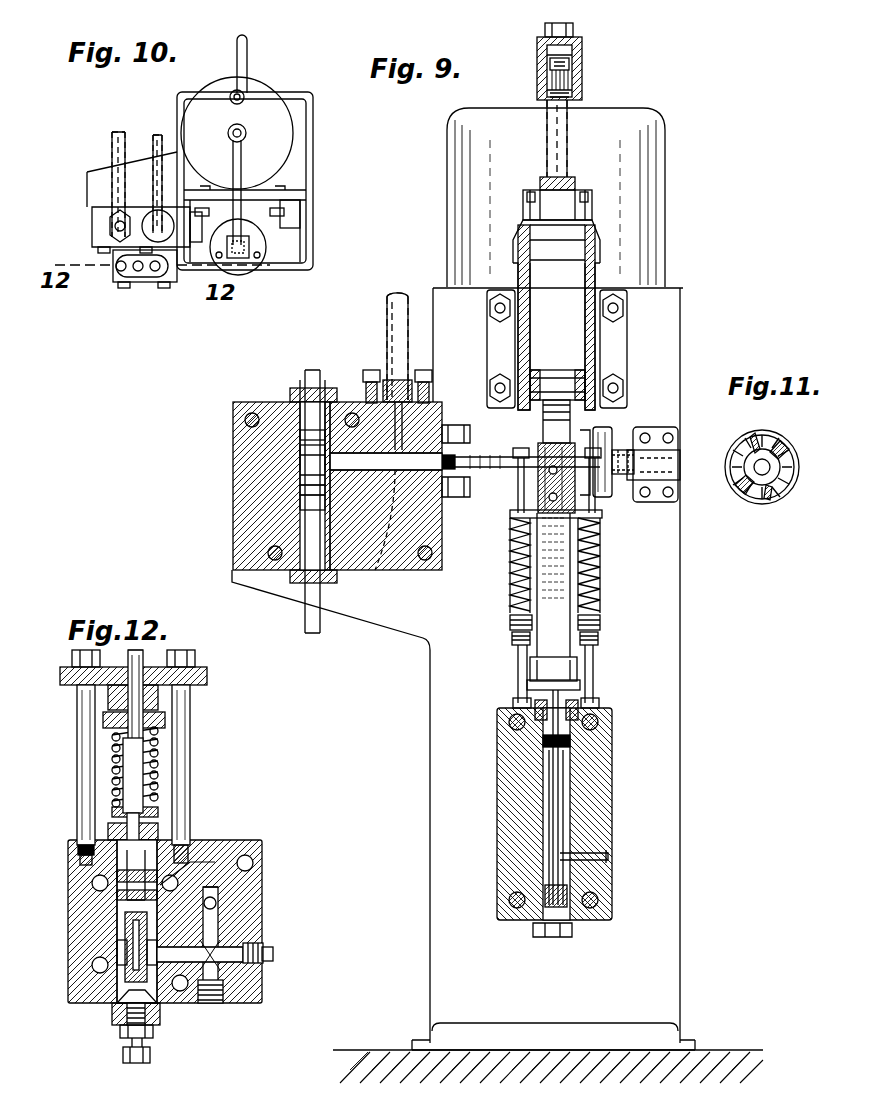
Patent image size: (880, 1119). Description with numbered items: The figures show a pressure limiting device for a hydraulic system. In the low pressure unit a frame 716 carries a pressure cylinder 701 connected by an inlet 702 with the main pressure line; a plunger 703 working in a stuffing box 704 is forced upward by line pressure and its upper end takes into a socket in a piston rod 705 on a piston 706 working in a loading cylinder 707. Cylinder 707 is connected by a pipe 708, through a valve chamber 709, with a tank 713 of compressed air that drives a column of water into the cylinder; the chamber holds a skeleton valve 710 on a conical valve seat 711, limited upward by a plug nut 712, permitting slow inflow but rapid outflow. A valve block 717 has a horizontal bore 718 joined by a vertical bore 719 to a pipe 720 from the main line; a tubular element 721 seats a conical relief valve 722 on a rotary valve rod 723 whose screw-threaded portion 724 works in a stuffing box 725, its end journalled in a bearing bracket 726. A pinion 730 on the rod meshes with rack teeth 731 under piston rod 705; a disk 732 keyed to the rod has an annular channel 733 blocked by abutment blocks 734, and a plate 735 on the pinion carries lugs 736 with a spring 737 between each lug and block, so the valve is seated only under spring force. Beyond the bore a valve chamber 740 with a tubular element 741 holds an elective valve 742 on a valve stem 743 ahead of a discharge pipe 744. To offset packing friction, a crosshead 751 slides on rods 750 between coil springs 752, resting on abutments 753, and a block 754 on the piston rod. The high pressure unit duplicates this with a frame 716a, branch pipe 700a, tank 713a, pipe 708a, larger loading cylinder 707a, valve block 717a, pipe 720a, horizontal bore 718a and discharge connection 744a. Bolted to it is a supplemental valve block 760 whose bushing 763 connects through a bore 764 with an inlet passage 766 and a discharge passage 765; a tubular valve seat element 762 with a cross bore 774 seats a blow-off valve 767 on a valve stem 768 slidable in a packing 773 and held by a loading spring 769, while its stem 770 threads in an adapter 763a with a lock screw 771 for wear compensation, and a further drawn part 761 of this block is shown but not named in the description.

In FIG. 10, the branch pipe 700a is at (248, 46).
In FIG. 10, the tank 713a is at (258, 75).
In FIG. 10, the pipe 720a is at (158, 140).
In FIG. 10, the discharge connection 744a is at (112, 145).
In FIG. 10, the horizontal bore 718a is at (135, 222).
In FIG. 10, the valve block 717a is at (97, 226).
In FIG. 10, the supplemental valve block 760 is at (118, 282).
In FIG. 12, the supplemental valve block 760 is at (262, 842).
In FIG. 10, the pipe 708a is at (243, 195).
In FIG. 10, the frame 716a is at (300, 198).
In FIG. 10, the loading cylinder 707a is at (245, 268).
In FIG. 9, the plug nut 712 is at (575, 27).
In FIG. 9, the skeleton valve 710 is at (548, 62).
In FIG. 9, the conical valve seat 711 is at (548, 72).
In FIG. 9, the valve chamber 709 is at (582, 85).
In FIG. 9, the pipe 708 is at (568, 142).
In FIG. 9, the tank 713 is at (665, 182).
In FIG. 9, the loading cylinder 707 is at (590, 358).
In FIG. 9, the piston 706 is at (578, 398).
In FIG. 9, the plate 735 is at (612, 430).
In FIG. 9, the pinion 730 is at (593, 440).
In FIG. 9, the disk 732 is at (630, 450).
In FIG. 11, the disk 732 is at (742, 500).
In FIG. 9, the bearing bracket 726 is at (678, 450).
In FIG. 9, the vertical bore 719 is at (395, 440).
In FIG. 9, the screw-threaded portion 724 is at (462, 452).
In FIG. 9, the rotary valve rod 723 is at (508, 468).
In FIG. 9, the stuffing box 725 is at (458, 497).
In FIG. 9, the rods 750 is at (518, 497).
In FIG. 9, the block 754 is at (575, 497).
In FIG. 9, the crosshead 751 is at (590, 513).
In FIG. 9, the coil springs 752 is at (600, 580).
In FIG. 9, the abutments 753 is at (510, 617).
In FIG. 9, the rack teeth 731 is at (536, 645).
In FIG. 9, the piston rod 705 is at (577, 653).
In FIG. 9, the stuffing box 704 is at (570, 740).
In FIG. 9, the plunger 703 is at (560, 760).
In FIG. 9, the pressure cylinder 701 is at (612, 802).
In FIG. 9, the inlet 702 is at (592, 858).
In FIG. 9, the frame 716 is at (430, 678).
In FIG. 9, the valve stem 743 is at (300, 432).
In FIG. 9, the valve chamber 740 is at (300, 465).
In FIG. 9, the elective valve 742 is at (300, 490).
In FIG. 9, the tubular element 741 is at (300, 502).
In FIG. 9, the valve block 717 is at (300, 520).
In FIG. 9, the discharge pipe 744 is at (305, 520).
In FIG. 9, the horizontal bore 718 is at (338, 402).
In FIG. 9, the pipe 720 is at (387, 312).
In FIG. 9, the tubular element 721 is at (372, 570).
In FIG. 9, the relief valve 722 is at (395, 570).
In FIG. 11, the abutment blocks 734 is at (753, 436).
In FIG. 11, the annular channel 733 is at (785, 436).
In FIG. 11, the lugs 736 is at (792, 462).
In FIG. 11, the spring 737 is at (780, 472).
In FIG. 12, the loading spring 769 is at (162, 768).
In FIG. 12, the valve stem 768 is at (80, 875).
In FIG. 12, the packing 773 is at (117, 876).
In FIG. 12, the blow-off valve 767 is at (220, 880).
In FIG. 12, the discharge passage 765 is at (117, 896).
In FIG. 12, the inlet passage 766 is at (220, 905).
In FIG. 12, the plunger 761 is at (117, 912).
In FIG. 12, the tubular valve seat element 762 is at (200, 935).
In FIG. 12, the cross bore 774 is at (117, 952).
In FIG. 12, the bore 764 is at (240, 962).
In FIG. 12, the bushing 763 is at (117, 1000).
In FIG. 12, the adapter 763a is at (115, 1030).
In FIG. 12, the stem 770 is at (160, 1018).
In FIG. 12, the lock screw 771 is at (143, 1063).